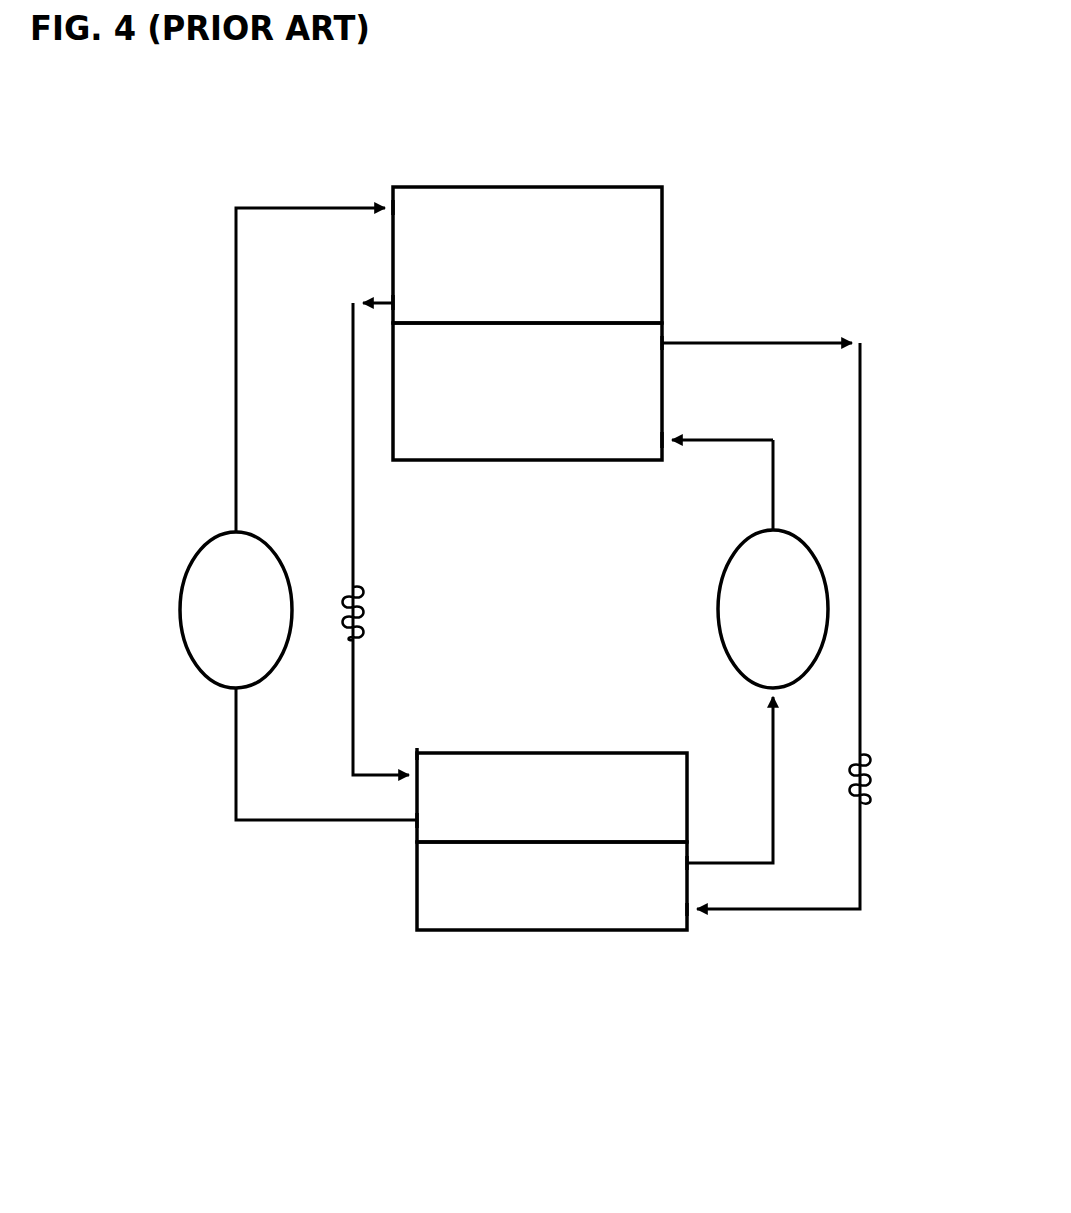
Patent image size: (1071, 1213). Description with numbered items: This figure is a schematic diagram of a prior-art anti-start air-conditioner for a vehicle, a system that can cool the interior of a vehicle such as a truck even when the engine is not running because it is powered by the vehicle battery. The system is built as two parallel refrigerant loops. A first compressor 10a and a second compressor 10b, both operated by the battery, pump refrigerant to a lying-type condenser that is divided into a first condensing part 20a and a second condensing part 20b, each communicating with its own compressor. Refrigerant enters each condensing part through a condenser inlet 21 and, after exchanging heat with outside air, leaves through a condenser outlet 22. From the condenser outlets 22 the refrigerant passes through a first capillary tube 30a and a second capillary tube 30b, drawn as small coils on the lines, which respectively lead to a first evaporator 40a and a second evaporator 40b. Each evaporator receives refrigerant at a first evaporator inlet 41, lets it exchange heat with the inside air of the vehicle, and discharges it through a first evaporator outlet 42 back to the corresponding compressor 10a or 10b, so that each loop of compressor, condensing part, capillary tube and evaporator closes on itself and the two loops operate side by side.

The first compressor 10a is at (812, 595).
The second compressor 10b is at (220, 560).
The first condensing part 20a is at (500, 435).
The second condensing part 20b is at (540, 208).
The condenser inlet 21 is at (390, 202).
The condenser outlet 22 is at (390, 298).
The first capillary tube 30a is at (864, 800).
The second capillary tube 30b is at (348, 585).
The first evaporator 40a is at (547, 928).
The second evaporator 40b is at (565, 768).
The first evaporator inlet 41 is at (417, 752).
The first evaporator outlet 42 is at (414, 823).